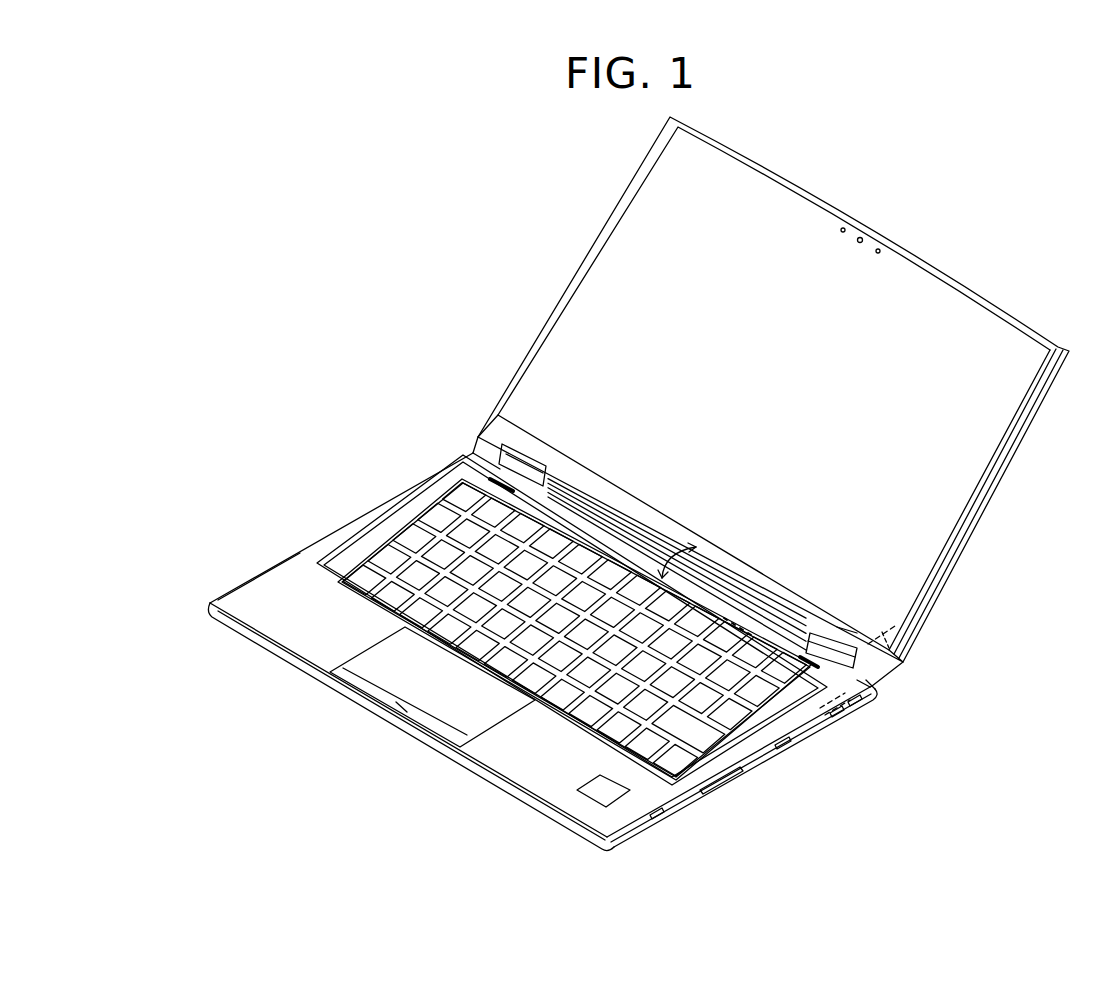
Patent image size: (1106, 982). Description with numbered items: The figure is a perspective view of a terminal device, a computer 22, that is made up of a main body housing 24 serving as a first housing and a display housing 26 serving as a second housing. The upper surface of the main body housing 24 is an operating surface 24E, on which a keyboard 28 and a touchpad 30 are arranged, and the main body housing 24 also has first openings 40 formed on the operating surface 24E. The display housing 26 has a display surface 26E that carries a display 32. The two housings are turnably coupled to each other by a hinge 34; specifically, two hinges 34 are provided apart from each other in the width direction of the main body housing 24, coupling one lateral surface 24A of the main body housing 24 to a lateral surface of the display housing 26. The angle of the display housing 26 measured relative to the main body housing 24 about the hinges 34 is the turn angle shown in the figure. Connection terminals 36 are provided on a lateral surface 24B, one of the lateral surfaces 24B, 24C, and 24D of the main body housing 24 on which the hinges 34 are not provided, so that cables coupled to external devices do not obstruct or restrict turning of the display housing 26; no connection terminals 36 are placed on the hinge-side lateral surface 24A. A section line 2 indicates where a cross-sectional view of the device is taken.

The computer 22 is at (340, 235).
The main body housing 24 is at (215, 632).
The lateral surface 24A is at (893, 690).
The lateral surface 24B is at (700, 818).
The lateral surface 24C is at (303, 700).
The lateral surface 24D is at (253, 592).
The operating surface 24E is at (290, 575).
The display housing 26 is at (1046, 327).
The display surface 26E is at (500, 428).
The keyboard 28 is at (395, 500).
The touchpad 30 is at (480, 770).
The display 32 is at (548, 340).
The hinge 34 is at (541, 444).
The connection terminals 36 is at (862, 722).
The first openings 40 is at (585, 470).
The line 2- 2 is at (912, 642).